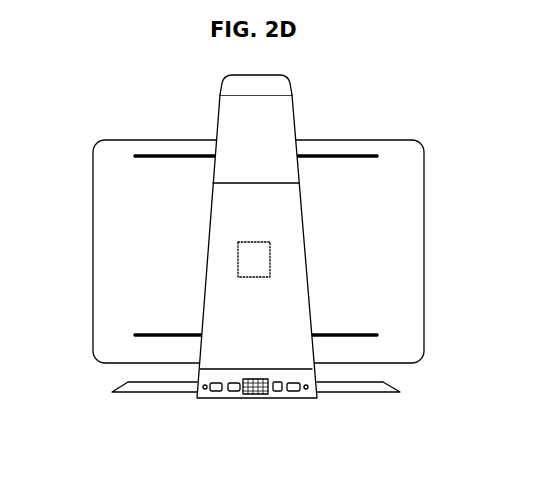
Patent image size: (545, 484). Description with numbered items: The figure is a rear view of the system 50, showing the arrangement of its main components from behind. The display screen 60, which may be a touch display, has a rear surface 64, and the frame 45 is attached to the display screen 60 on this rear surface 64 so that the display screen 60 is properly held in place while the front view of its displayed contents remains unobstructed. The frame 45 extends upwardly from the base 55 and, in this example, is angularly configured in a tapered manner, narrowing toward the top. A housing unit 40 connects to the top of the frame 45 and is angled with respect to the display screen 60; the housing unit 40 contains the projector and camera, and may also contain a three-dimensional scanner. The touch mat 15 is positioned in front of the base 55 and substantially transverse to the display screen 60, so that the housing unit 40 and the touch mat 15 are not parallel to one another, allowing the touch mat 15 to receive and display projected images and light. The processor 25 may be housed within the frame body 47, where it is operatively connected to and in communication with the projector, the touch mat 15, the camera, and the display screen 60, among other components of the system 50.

The touch mat 15 is at (395, 383).
The processor 25 is at (270, 256).
The housing unit 40 is at (287, 80).
The frame 45 is at (218, 116).
The frame body 47 is at (283, 298).
The system 50 is at (68, 144).
The base 55 is at (293, 398).
The display screen 60 is at (93, 199).
The rear surface 64 is at (411, 171).